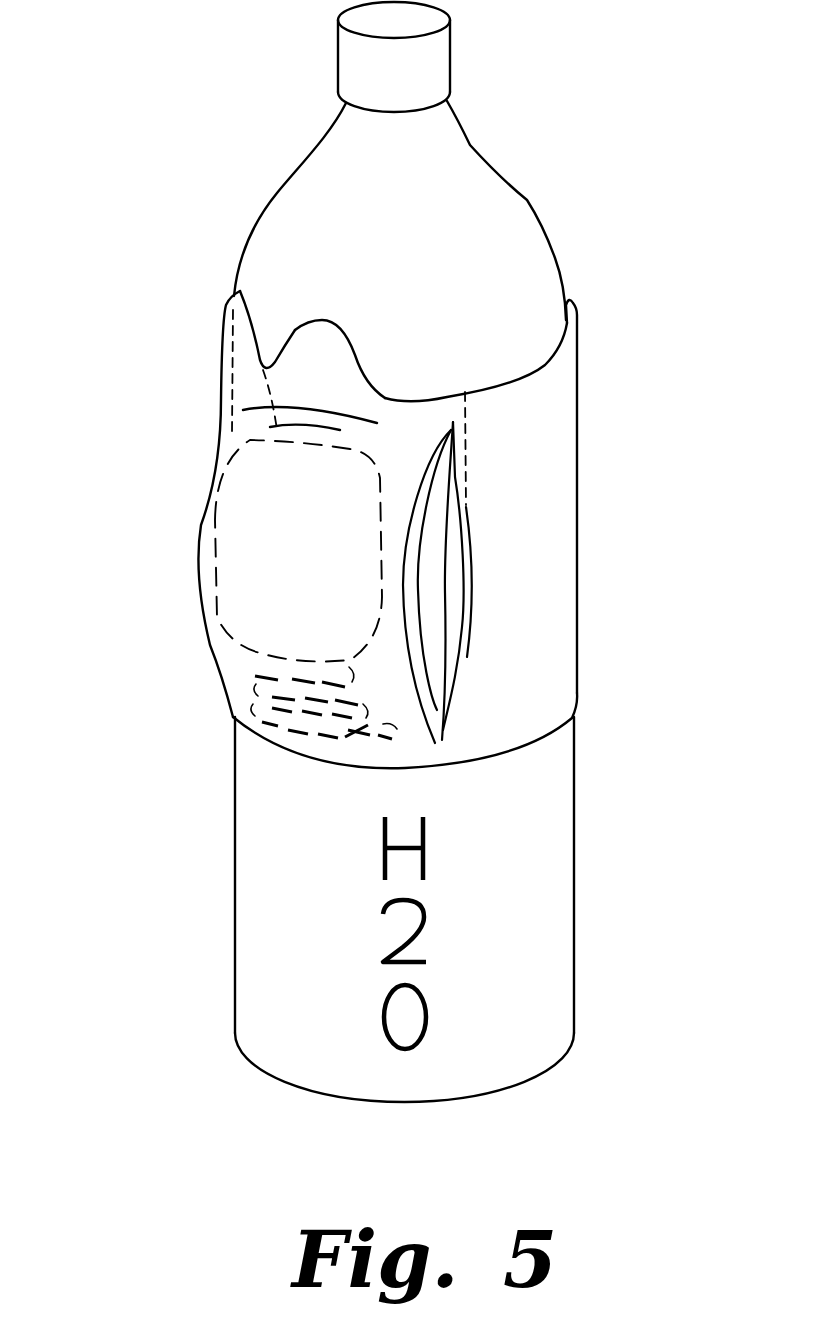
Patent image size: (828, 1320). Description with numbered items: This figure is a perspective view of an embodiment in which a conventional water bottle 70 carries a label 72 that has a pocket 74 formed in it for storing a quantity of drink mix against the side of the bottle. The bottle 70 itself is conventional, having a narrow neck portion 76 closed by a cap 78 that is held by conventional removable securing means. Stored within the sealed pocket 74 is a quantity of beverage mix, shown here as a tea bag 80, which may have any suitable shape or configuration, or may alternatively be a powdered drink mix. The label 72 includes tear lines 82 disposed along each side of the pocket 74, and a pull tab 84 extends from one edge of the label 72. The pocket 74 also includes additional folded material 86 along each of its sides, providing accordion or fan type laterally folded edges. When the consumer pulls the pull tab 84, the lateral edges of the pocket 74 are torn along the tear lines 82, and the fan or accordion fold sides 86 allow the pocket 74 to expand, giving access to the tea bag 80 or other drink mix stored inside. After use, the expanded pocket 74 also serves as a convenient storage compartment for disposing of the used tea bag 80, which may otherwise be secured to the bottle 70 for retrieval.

The water bottle 70 is at (530, 1080).
The label 72 is at (553, 650).
The pocket 74 is at (263, 358).
The neck portion 76 is at (449, 104).
The cap 78 is at (338, 32).
The tea bag 80 is at (207, 529).
The tear lines 82 is at (228, 372).
The pull tab 84 is at (333, 320).
The folded material 86 is at (460, 550).